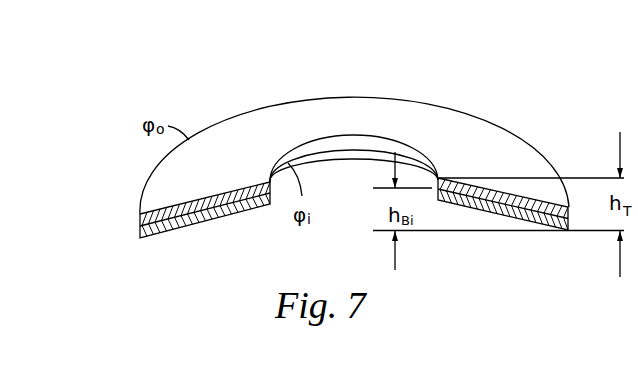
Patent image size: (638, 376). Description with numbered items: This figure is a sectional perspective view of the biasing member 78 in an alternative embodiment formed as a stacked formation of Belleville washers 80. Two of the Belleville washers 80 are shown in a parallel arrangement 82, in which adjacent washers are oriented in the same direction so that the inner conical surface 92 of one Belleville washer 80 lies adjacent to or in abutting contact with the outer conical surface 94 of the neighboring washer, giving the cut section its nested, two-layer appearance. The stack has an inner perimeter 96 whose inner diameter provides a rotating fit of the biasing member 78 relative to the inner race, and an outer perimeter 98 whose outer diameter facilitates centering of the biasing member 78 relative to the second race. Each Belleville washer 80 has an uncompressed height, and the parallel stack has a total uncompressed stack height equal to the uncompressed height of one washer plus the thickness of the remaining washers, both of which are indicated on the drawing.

The biasing member 78 is at (334, 167).
The Belleville washer 80 is at (334, 167).
The parallel arrangement 82 is at (251, 98).
The inner conical surface 92 is at (165, 232).
The outer conical surface 94 is at (158, 190).
The inner perimeter 96 is at (358, 155).
The outer perimeter 98 is at (442, 105).